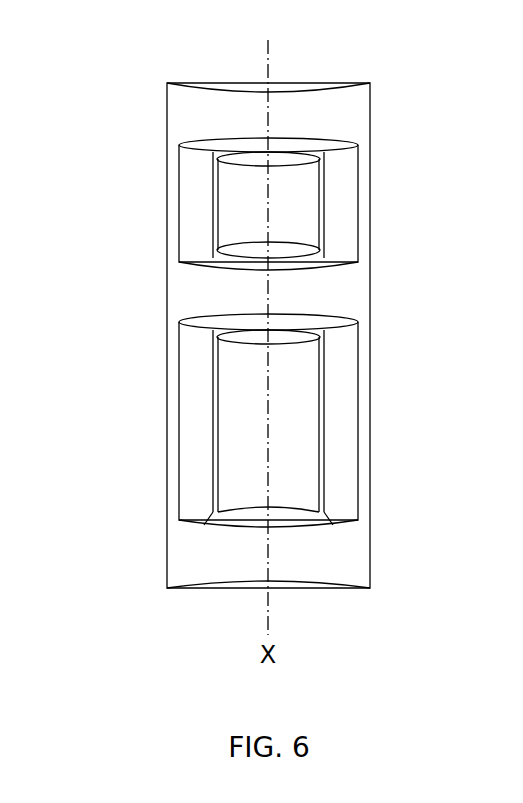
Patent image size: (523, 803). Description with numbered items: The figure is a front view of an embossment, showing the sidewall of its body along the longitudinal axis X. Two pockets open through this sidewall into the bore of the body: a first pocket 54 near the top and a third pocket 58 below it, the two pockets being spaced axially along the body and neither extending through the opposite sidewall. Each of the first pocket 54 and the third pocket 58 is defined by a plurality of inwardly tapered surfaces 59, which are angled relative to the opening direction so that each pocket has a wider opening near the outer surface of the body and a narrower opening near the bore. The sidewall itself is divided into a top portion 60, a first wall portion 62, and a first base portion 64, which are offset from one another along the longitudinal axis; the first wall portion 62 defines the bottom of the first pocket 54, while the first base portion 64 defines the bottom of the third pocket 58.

The first pocket 54 is at (255, 183).
The third pocket 58 is at (245, 465).
The inwardly tapered surfaces 59 is at (287, 155).
The top portion 60 is at (337, 114).
The first wall portion 62 is at (318, 294).
The first base portion 64 is at (333, 548).